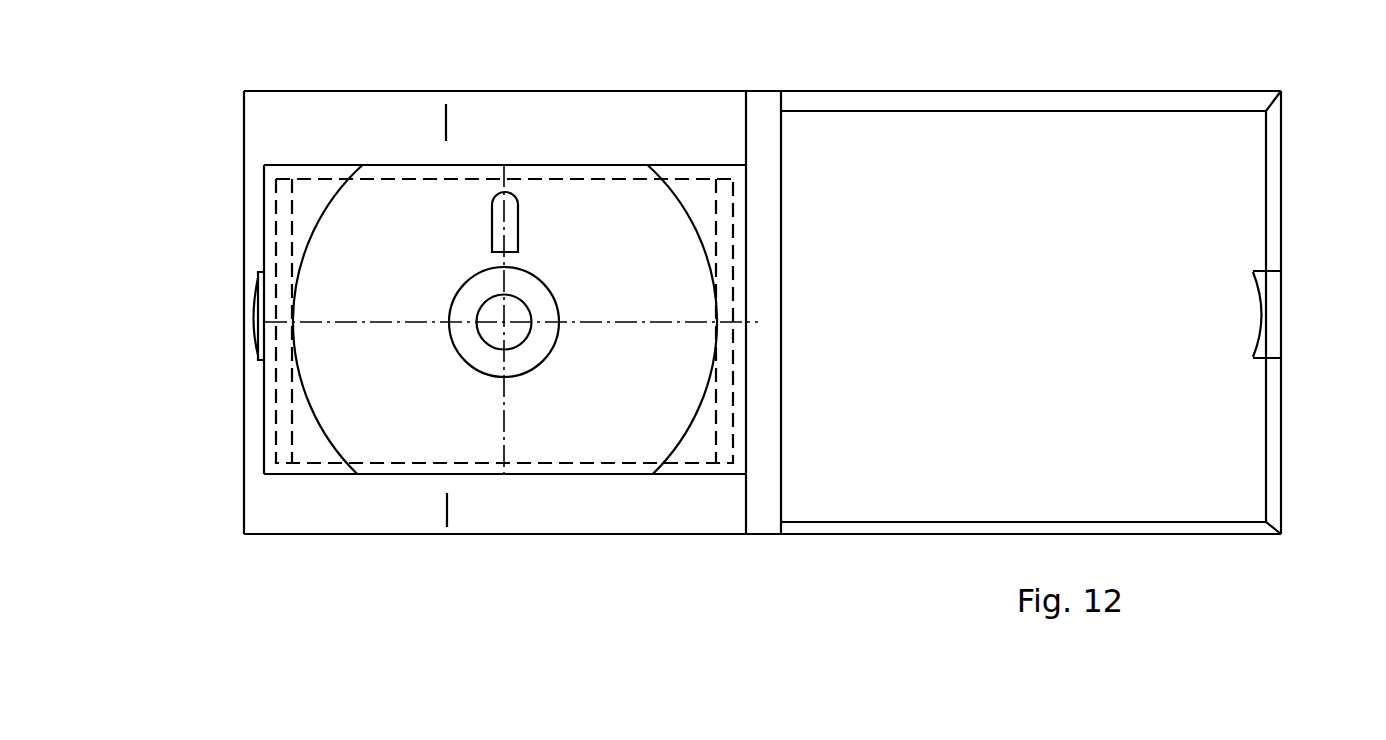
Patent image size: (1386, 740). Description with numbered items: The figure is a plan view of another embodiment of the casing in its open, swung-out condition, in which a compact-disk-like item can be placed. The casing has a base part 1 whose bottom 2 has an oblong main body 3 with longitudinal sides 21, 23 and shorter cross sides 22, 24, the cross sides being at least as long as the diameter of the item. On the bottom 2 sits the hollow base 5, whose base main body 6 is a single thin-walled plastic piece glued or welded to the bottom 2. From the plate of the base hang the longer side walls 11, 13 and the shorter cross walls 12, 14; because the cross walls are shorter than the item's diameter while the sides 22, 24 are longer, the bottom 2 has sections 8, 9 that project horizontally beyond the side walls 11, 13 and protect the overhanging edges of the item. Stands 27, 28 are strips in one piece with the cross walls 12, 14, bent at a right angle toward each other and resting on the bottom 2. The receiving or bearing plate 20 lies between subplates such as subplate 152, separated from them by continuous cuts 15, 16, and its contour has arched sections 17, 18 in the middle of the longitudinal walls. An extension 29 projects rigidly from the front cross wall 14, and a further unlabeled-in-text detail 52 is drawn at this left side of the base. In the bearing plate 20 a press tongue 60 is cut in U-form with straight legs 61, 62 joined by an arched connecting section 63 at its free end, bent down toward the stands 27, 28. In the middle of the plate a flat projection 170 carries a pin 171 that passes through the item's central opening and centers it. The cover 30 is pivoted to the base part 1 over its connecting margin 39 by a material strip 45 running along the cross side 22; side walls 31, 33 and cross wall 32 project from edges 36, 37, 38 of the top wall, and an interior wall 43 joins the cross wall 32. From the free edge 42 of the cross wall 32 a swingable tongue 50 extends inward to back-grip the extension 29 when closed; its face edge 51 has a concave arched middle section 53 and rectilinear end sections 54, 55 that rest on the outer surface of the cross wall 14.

The base part 1 is at (254, 541).
The bottom 2 is at (242, 138).
The main body of the bottom 3 is at (242, 112).
The base 5 is at (382, 501).
The base main body 6 is at (596, 167).
The bottom section 8 is at (355, 136).
The bottom section 9 is at (295, 516).
The side wall 11 is at (321, 160).
The cross wall 12 is at (743, 453).
The side wall 13 is at (532, 478).
The cross wall 14 is at (264, 184).
The cut 15 is at (308, 185).
The cut 16 is at (700, 402).
The arched section 17 is at (530, 167).
The arched section 18 is at (422, 475).
The bearing plate 20 is at (594, 258).
The side 21 is at (528, 91).
The side 22 is at (744, 147).
The side 23 is at (585, 536).
The side 24 is at (244, 222).
The stand 27 is at (292, 443).
The stand 28 is at (722, 203).
The extension 29 is at (256, 345).
The cover 30 is at (965, 91).
The side wall 31 is at (860, 90).
The cross wall 32 is at (1283, 170).
The side wall 33 is at (913, 536).
The edge 36 is at (1175, 130).
The edge 37 is at (1248, 470).
The edge 38 is at (1193, 503).
The connecting margin 39 is at (782, 143).
The free edge 42 is at (1283, 310).
The interior wall 43 is at (989, 336).
The material strip 45 is at (764, 517).
The tongue 50 is at (1256, 297).
The face edge 51 is at (1260, 320).
The latch notch 52 is at (256, 295).
The arched concave section 53 is at (1258, 343).
The rectilinear section 54 is at (1258, 277).
The rectilinear section 55 is at (1258, 360).
The press tongue 60 is at (492, 208).
The leg 61 is at (492, 227).
The leg 62 is at (518, 225).
The connecting section 63 is at (508, 193).
The subplate 152 is at (677, 180).
The flat projection 170 is at (475, 343).
The pin 171 is at (512, 328).